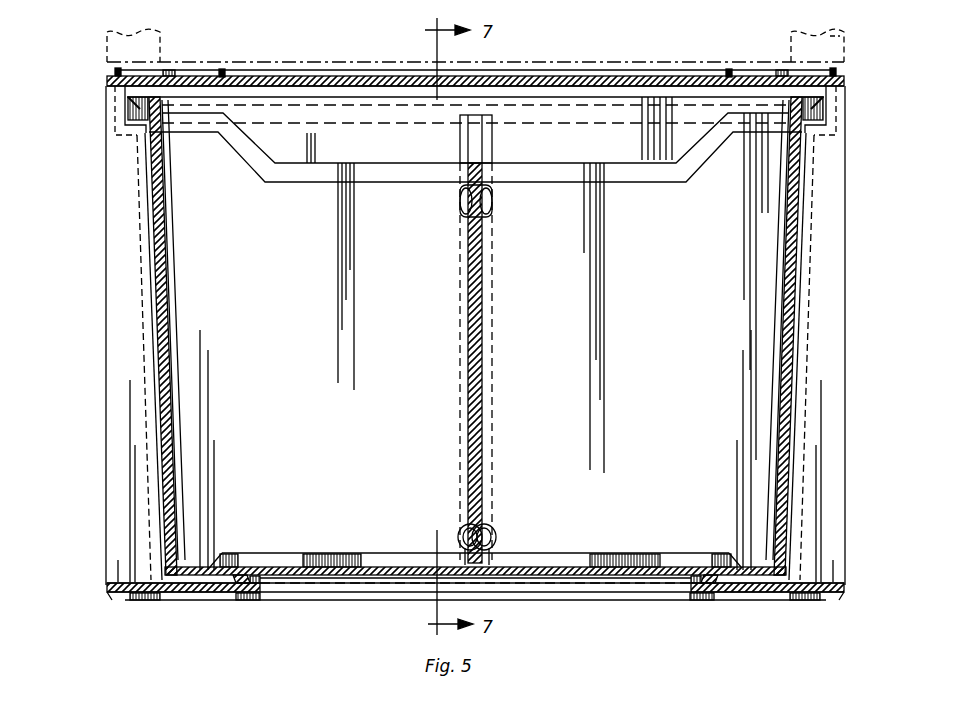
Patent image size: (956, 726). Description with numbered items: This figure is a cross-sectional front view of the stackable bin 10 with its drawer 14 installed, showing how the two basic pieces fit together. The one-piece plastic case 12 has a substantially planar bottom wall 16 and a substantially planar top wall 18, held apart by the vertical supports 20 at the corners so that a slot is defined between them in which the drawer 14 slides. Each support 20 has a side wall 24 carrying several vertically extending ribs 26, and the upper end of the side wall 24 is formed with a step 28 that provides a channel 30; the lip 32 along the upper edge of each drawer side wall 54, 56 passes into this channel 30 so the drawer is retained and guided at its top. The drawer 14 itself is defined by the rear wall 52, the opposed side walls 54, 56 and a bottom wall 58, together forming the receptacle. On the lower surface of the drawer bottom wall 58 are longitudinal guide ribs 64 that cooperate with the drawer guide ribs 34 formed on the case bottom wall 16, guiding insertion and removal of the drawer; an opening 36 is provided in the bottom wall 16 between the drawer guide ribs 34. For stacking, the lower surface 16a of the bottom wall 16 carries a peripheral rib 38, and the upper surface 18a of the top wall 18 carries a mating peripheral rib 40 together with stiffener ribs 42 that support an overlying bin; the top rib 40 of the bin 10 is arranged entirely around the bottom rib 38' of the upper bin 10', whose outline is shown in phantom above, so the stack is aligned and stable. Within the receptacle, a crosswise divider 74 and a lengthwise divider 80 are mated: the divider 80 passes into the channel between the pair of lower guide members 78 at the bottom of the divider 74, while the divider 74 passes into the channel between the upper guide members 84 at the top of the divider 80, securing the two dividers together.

The stackable bin 10 is at (519, 357).
The top stacked bin 10' is at (862, 32).
The case 12 is at (852, 363).
The drawer 14 is at (790, 432).
The bottom wall 16 is at (210, 598).
The lower surface 16a is at (175, 600).
The top wall 18 is at (281, 72).
The upper surface 18a is at (183, 74).
The vertical support 20 is at (100, 236).
The side wall 24 is at (150, 265).
The vertically extending rib 26 is at (114, 300).
The step 28 is at (122, 125).
The channel 30 is at (125, 95).
The lip 32 is at (124, 110).
The drawer guide rib 34 is at (257, 580).
The opening 36 is at (333, 590).
The bottom peripheral rib 38 is at (472, 616).
The bottom peripheral rib of top bin 38' is at (477, 47).
The top peripheral rib 40 is at (113, 74).
The stiffener rib 42 is at (222, 72).
The rear wall 52 is at (398, 153).
The side wall 54 is at (158, 340).
The side wall 56 is at (794, 328).
The bottom wall 58 is at (617, 580).
The guide rib 64 is at (230, 590).
The crosswise divider 74 is at (650, 338).
The lower guide member 78 is at (495, 537).
The lengthwise divider 80 is at (477, 143).
The upper guide member 84 is at (493, 202).